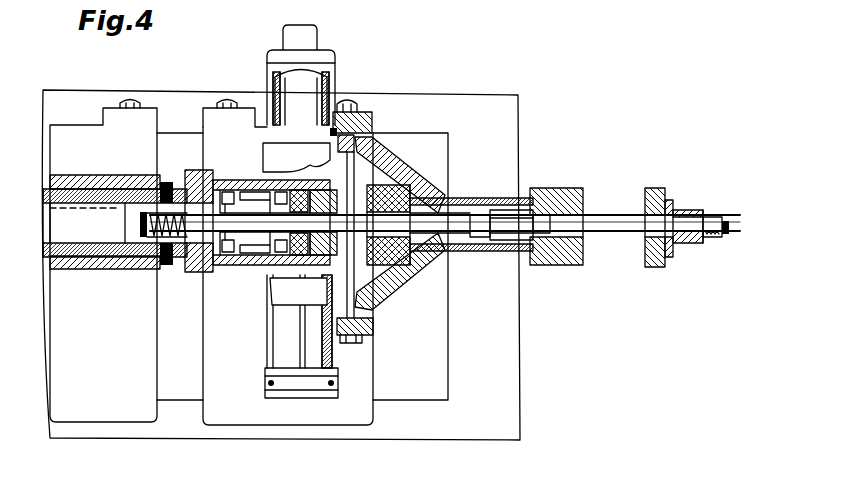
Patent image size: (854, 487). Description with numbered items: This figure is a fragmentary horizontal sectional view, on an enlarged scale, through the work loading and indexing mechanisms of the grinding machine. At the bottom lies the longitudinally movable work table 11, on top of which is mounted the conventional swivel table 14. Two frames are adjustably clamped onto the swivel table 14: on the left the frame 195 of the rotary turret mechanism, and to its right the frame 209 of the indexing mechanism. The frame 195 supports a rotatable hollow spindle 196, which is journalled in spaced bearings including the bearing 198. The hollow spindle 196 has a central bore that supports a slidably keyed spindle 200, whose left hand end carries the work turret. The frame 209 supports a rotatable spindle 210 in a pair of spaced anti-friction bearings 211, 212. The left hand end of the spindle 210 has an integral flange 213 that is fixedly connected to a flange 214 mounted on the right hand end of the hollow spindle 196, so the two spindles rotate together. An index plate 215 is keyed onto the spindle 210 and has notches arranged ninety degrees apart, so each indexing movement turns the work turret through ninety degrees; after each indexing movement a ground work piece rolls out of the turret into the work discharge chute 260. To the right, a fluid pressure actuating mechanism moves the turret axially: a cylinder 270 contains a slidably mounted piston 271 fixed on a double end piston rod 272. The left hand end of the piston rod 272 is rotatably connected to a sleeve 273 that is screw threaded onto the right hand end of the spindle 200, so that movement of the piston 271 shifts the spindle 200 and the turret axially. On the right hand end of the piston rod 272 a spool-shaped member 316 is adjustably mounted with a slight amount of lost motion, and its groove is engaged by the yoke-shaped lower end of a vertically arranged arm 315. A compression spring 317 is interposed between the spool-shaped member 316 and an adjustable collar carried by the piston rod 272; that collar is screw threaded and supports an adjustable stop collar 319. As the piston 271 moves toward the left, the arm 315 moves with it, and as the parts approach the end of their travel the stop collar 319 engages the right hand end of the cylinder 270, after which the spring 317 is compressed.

The work table 11 is at (504, 420).
The swivel table 14 is at (423, 389).
The frame 195 is at (107, 408).
The hollow spindle 196 is at (67, 247).
The bearing 198 is at (118, 253).
The spindle 200 is at (87, 223).
The frame 209 is at (240, 409).
The spindle 210 is at (255, 240).
The anti-friction bearing 211 is at (236, 180).
The anti-friction bearing 212 is at (268, 188).
The integral flange 213 is at (207, 275).
The flange 214 is at (187, 275).
The index plate 215 is at (305, 265).
The work discharge chute 260 is at (672, 0).
The cylinder 270 is at (482, 250).
The piston 271 is at (517, 215).
The double end piston rod 272 is at (452, 221).
The sleeve 273 is at (143, 238).
The arm 315 is at (703, 210).
The spool-shaped member 316 is at (710, 240).
The compression spring 317 is at (673, 210).
The adjustable stop collar 319 is at (653, 267).